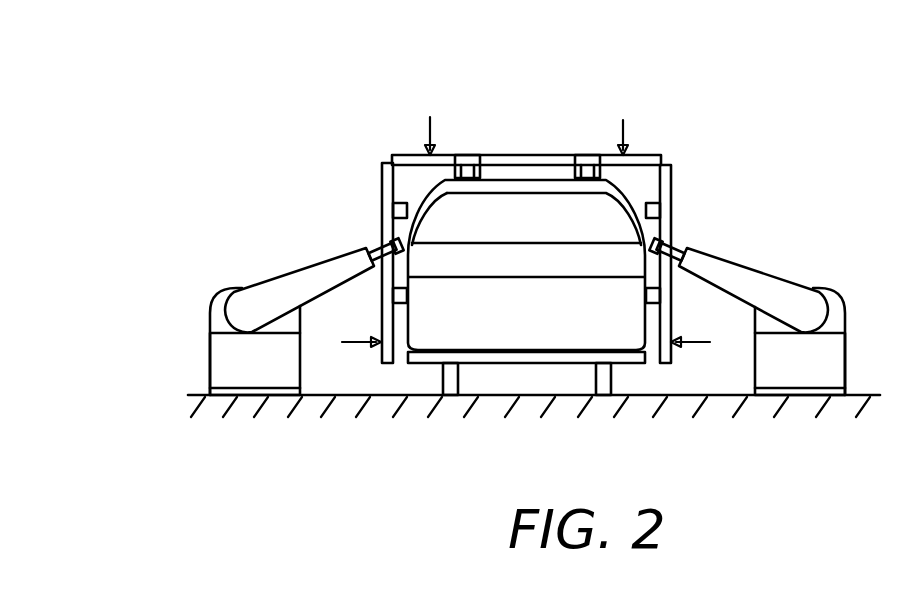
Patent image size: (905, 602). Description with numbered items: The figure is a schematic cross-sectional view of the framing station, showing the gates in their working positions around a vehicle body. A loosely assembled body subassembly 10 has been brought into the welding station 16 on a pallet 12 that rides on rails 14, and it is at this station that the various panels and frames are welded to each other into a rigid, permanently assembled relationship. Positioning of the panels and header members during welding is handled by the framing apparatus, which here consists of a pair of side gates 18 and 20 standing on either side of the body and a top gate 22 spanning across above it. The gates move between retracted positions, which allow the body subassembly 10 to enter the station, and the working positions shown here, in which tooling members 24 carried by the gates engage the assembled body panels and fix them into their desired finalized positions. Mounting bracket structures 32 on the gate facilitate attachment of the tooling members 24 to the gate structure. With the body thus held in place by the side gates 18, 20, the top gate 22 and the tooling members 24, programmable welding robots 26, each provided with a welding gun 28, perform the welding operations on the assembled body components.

The body subassembly 10 is at (502, 326).
The pallet 12 is at (552, 366).
The rails 14 is at (612, 380).
The welding station 16 is at (540, 188).
The side gate 18 is at (382, 184).
The side gate 20 is at (672, 181).
The top gate 22 is at (537, 153).
The tooling members 24 is at (463, 167).
The programmable welding robot 26 is at (263, 278).
The welding gun 28 is at (387, 247).
The mounting bracket structure 32 is at (592, 155).